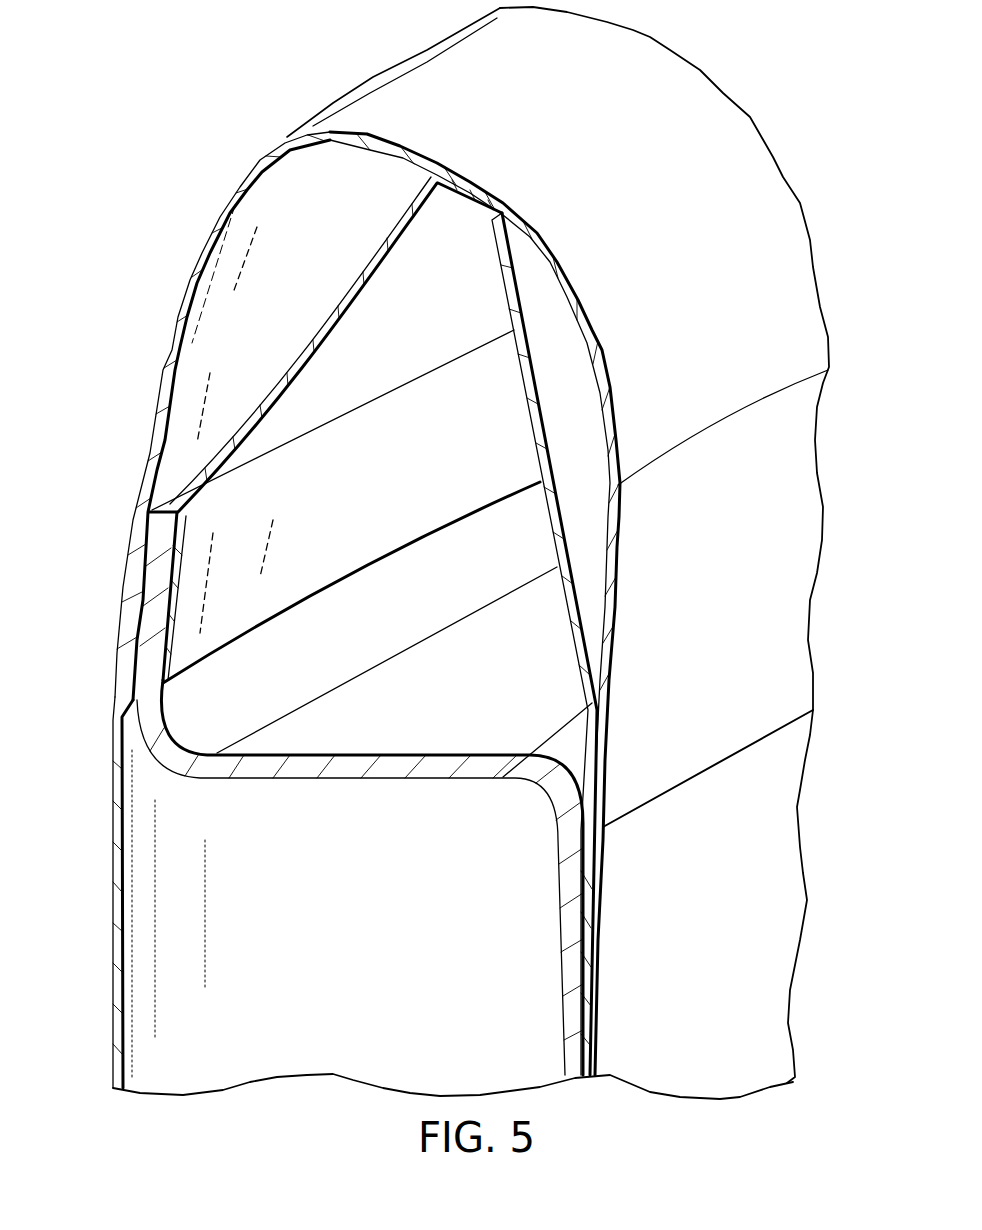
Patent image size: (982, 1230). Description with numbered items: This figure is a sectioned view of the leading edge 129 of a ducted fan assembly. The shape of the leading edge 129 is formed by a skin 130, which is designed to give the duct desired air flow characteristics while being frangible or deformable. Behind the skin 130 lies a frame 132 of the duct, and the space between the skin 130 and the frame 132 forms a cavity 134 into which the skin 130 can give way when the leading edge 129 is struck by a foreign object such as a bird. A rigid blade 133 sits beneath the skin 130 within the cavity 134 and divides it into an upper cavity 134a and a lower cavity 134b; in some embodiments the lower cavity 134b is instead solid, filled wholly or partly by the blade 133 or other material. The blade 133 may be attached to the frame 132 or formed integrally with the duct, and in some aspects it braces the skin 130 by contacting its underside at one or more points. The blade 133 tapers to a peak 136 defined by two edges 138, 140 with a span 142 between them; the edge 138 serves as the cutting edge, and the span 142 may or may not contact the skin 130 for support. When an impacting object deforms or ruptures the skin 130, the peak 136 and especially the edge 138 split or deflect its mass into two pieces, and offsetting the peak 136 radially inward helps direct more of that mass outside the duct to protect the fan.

The leading edge 129 is at (373, 78).
The skin 130 is at (125, 413).
The frame 132 is at (370, 780).
The blade 133 is at (333, 307).
The cavity 134 is at (210, 357).
The upper cavity 134a is at (245, 262).
The lower cavity 134b is at (357, 340).
The peak 136 is at (458, 227).
The edge 138 is at (438, 181).
The edge 140 is at (505, 208).
The span 142 is at (478, 190).